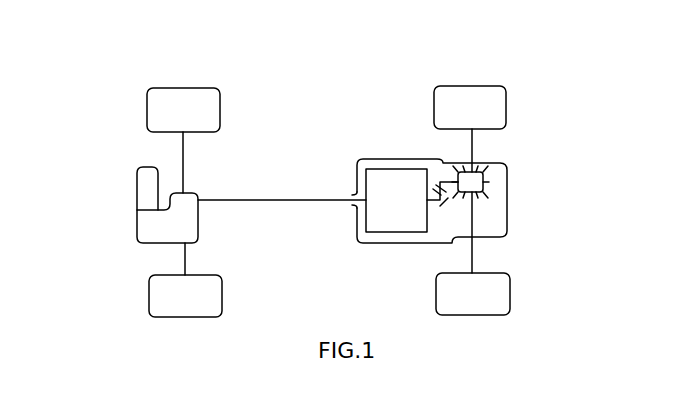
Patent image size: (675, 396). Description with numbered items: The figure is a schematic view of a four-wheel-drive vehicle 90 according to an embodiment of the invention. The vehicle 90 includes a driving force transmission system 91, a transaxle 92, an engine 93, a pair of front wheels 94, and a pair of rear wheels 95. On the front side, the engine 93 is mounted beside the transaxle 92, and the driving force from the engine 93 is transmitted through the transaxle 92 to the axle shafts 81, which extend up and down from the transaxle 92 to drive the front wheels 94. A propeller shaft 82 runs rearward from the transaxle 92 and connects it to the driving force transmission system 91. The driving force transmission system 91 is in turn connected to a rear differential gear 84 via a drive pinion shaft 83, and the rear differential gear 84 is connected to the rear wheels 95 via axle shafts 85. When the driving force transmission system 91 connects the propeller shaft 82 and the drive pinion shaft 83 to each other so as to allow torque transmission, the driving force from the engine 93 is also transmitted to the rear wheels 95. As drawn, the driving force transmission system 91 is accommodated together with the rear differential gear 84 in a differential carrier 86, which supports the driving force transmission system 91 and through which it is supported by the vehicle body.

The four-wheel-drive vehicle 90 is at (343, 72).
The axle shafts 81 is at (185, 160).
The propeller shaft 82 is at (284, 197).
The drive pinion shaft 83 is at (430, 203).
The rear differential gear 84 is at (488, 193).
The axle shafts 85 is at (474, 150).
The differential carrier 86 is at (370, 158).
The driving force transmission system 91 is at (405, 169).
The transaxle 92 is at (138, 229).
The engine 93 is at (138, 193).
The front wheels 94 is at (217, 108).
The rear wheels 95 is at (506, 108).